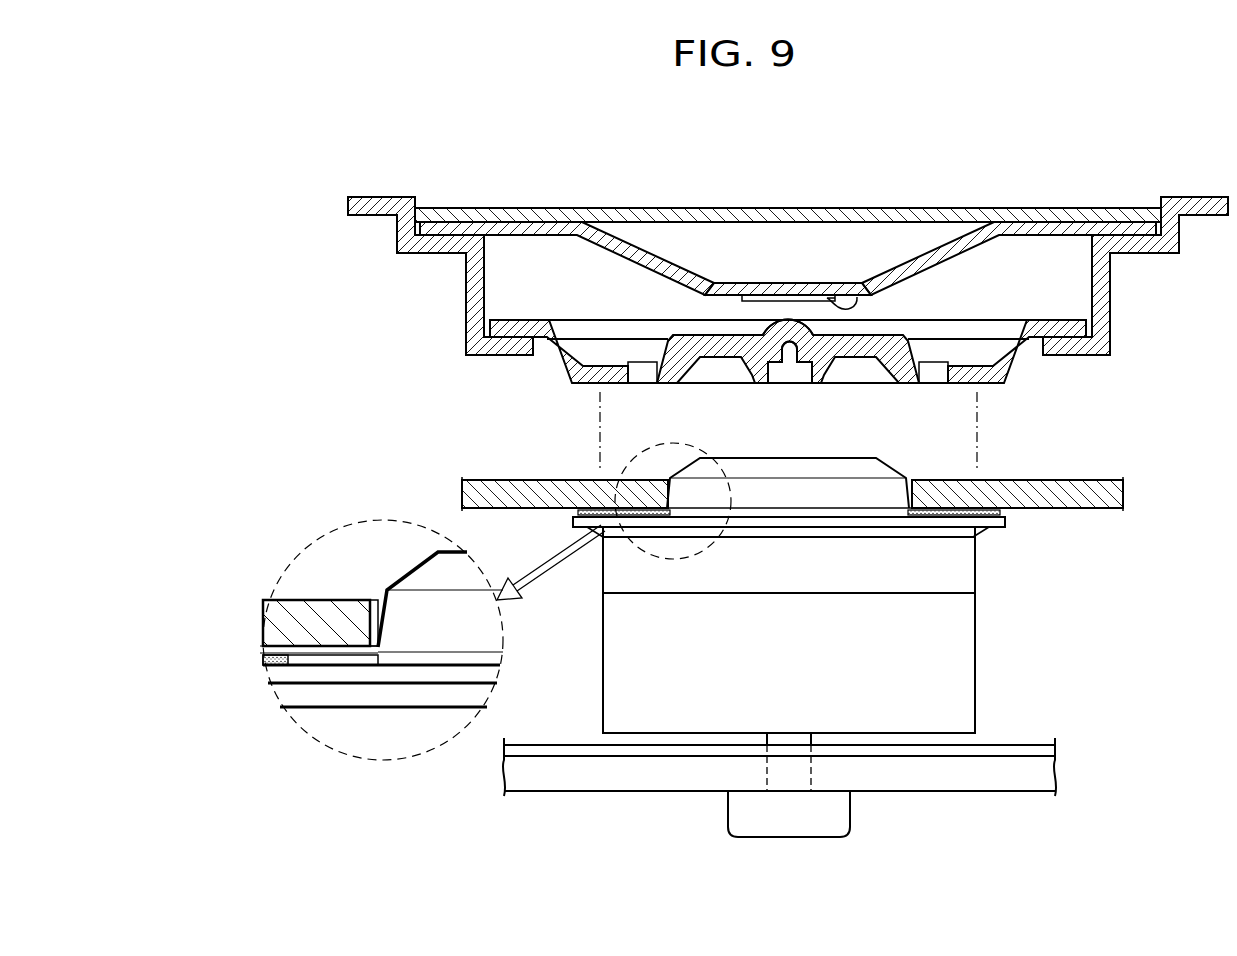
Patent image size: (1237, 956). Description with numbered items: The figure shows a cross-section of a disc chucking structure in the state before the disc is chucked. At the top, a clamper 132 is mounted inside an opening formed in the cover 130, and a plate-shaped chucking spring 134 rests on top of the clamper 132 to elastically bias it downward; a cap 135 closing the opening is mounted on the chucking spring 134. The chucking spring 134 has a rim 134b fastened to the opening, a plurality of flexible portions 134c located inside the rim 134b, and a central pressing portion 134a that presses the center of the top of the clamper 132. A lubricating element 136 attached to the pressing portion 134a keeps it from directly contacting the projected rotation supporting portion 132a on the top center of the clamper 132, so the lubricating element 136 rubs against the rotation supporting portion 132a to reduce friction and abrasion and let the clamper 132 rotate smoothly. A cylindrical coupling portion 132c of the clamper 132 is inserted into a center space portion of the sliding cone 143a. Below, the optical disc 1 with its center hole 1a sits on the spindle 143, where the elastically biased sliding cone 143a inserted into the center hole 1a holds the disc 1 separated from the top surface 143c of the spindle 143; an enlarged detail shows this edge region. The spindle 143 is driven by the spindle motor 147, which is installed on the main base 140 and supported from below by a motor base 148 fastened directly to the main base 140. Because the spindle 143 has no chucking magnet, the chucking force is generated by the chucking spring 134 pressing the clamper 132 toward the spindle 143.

The optical disc 1 is at (1124, 496).
The center hole 1a is at (375, 615).
The cover 130 is at (370, 205).
The clamper 132 is at (804, 343).
The rotation supporting portion 132a is at (788, 322).
The cylindrical coupling portion 132c is at (821, 385).
The chucking spring 134 is at (788, 233).
The pressing portion 134a is at (788, 285).
The rim 134b is at (477, 222).
The flexible portions 134c is at (650, 252).
The cap 135 is at (965, 213).
The lubricating element 136 is at (857, 297).
The main base 140 is at (1046, 772).
The spindle 143 is at (987, 552).
The sliding cone 143a is at (404, 551).
The top surface of the spindle 143c is at (264, 660).
The spindle motor 147 is at (967, 667).
The motor base 148 is at (1046, 750).